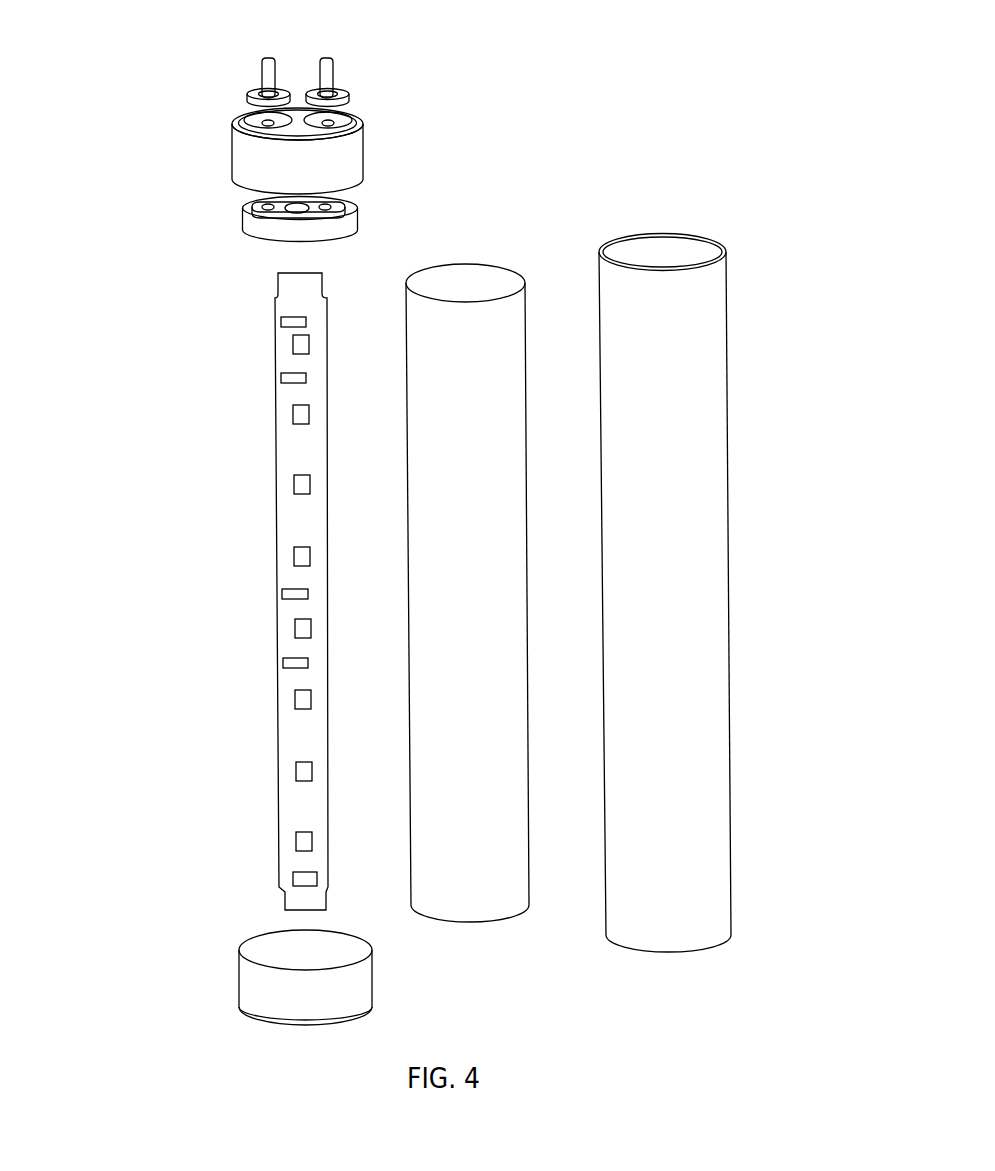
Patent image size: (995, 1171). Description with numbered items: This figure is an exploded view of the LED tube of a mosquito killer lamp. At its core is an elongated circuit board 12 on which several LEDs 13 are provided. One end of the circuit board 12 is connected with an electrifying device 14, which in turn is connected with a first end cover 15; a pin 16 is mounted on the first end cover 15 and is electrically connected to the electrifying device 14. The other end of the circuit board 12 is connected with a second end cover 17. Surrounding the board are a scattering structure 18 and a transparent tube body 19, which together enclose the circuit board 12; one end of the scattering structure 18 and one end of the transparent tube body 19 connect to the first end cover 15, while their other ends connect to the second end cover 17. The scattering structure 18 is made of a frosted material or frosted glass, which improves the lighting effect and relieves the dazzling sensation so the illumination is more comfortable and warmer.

The circuit board 12 is at (292, 530).
The LEDs 13 is at (297, 413).
The electrifying device 14 is at (280, 235).
The first end cover 15 is at (287, 165).
The pin 16 is at (272, 80).
The second end cover 17 is at (293, 1005).
The scattering structure 18 is at (498, 340).
The transparent tube body 19 is at (672, 457).